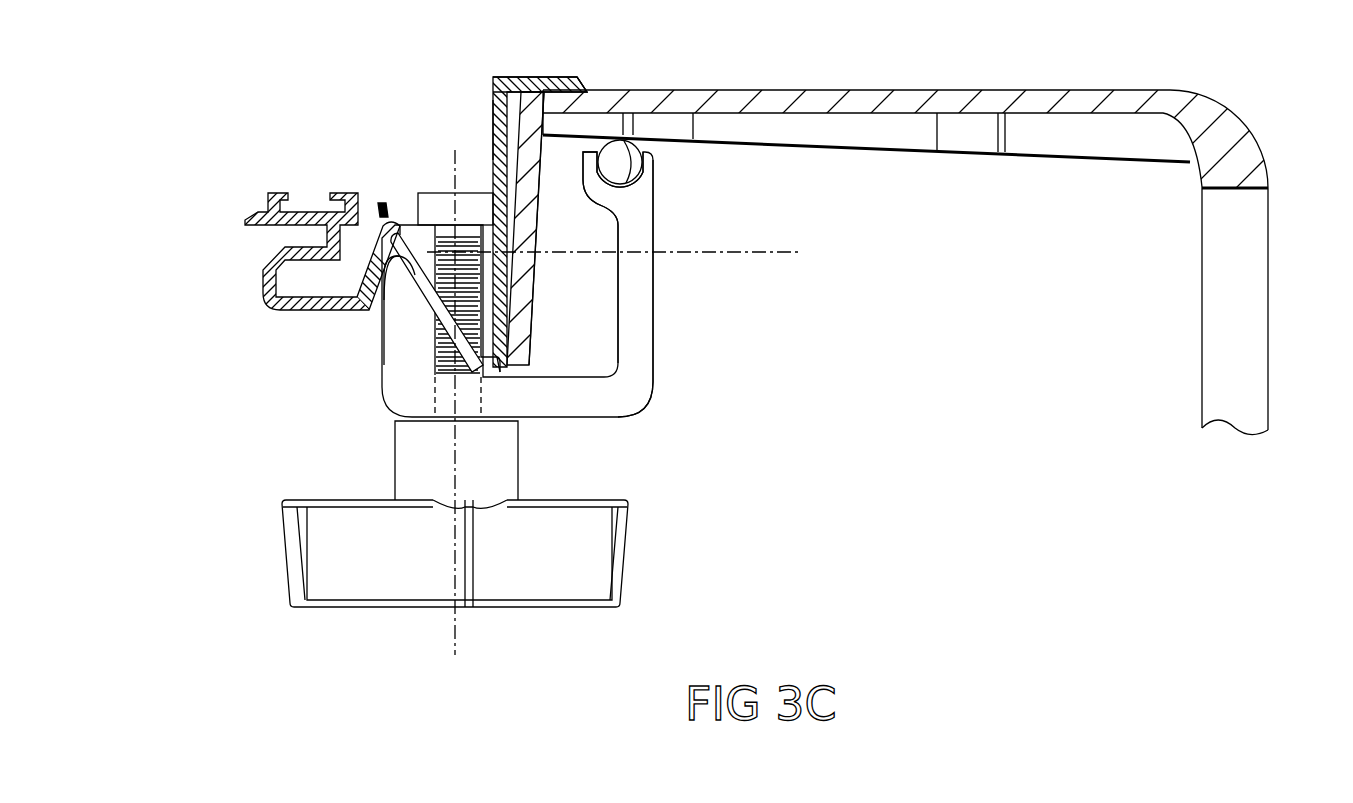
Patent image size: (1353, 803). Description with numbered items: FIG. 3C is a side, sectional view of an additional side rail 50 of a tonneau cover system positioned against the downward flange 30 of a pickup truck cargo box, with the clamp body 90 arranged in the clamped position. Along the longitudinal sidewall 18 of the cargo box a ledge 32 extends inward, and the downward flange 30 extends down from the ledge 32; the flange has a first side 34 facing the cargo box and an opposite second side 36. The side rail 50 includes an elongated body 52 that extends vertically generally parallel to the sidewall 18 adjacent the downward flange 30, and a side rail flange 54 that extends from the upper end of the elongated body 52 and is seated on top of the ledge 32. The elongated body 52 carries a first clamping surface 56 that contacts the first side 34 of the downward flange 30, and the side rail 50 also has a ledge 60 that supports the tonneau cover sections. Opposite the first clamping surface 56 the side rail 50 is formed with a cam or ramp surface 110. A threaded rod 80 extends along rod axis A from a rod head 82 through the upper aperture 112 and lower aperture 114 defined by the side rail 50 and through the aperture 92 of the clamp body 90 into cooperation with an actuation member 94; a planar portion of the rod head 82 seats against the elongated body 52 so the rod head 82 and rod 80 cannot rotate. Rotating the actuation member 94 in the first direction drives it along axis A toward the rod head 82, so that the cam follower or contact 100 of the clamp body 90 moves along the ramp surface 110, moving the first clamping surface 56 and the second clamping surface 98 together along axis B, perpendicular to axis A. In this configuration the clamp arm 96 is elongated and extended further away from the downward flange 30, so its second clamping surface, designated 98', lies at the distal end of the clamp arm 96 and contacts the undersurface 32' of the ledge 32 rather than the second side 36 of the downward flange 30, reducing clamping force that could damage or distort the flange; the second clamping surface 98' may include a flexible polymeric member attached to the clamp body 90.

The longitudinal sidewall 18 is at (1257, 307).
The downward flange 30 is at (530, 220).
The ledge 32 is at (914, 120).
The undersurface of the ledge 32' is at (866, 158).
The first side 34 is at (527, 95).
The second side 36 is at (538, 189).
The side rail 50 is at (381, 203).
The elongated body 52 is at (496, 103).
The side rail flange 54 is at (527, 77).
The first clamping surface 56 is at (506, 142).
The ledge of the side rail 60 is at (258, 208).
The rod 80 is at (437, 358).
The rod head 82 is at (438, 205).
The clamp body 90 is at (380, 394).
The aperture 92 is at (485, 397).
The actuation member 94 is at (603, 557).
The clamp arm 96 is at (640, 317).
The second clamping surface 98 is at (569, 282).
The second clamping surface 98' is at (649, 177).
The cam follower or contact 100 is at (420, 312).
The cam or ramp surface 110 is at (430, 340).
The upper aperture 112 is at (405, 218).
The lower aperture 114 is at (507, 375).
The rod axis A is at (440, 150).
The axis B is at (753, 250).